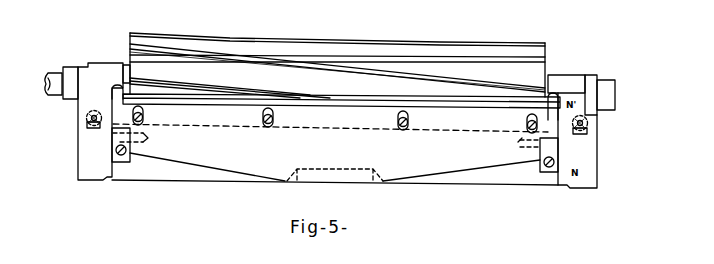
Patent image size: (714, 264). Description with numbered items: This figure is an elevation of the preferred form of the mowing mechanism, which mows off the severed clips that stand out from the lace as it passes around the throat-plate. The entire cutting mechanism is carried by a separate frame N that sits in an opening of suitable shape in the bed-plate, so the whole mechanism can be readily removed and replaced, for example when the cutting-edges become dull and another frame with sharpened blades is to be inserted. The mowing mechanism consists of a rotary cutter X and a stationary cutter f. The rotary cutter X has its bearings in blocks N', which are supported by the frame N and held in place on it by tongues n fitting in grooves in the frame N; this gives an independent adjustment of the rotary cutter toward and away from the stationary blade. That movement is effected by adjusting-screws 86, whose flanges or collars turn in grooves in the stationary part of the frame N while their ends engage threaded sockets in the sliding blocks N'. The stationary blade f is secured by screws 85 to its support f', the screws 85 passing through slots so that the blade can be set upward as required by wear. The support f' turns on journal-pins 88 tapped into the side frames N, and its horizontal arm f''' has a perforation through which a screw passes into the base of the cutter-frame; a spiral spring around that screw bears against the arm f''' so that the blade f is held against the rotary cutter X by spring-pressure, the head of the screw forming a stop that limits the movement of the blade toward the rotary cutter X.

The screws 85 is at (263, 118).
The adjusting-screws 86 is at (84, 110).
The journal-pins 88 is at (145, 141).
The tongues n is at (86, 122).
The frame N is at (86, 160).
The blocks N' is at (95, 82).
The rotary cutter X is at (337, 66).
The stationary cutter f is at (337, 72).
The support of the stationary blade f' is at (461, 163).
The horizontal arm f''' is at (335, 190).